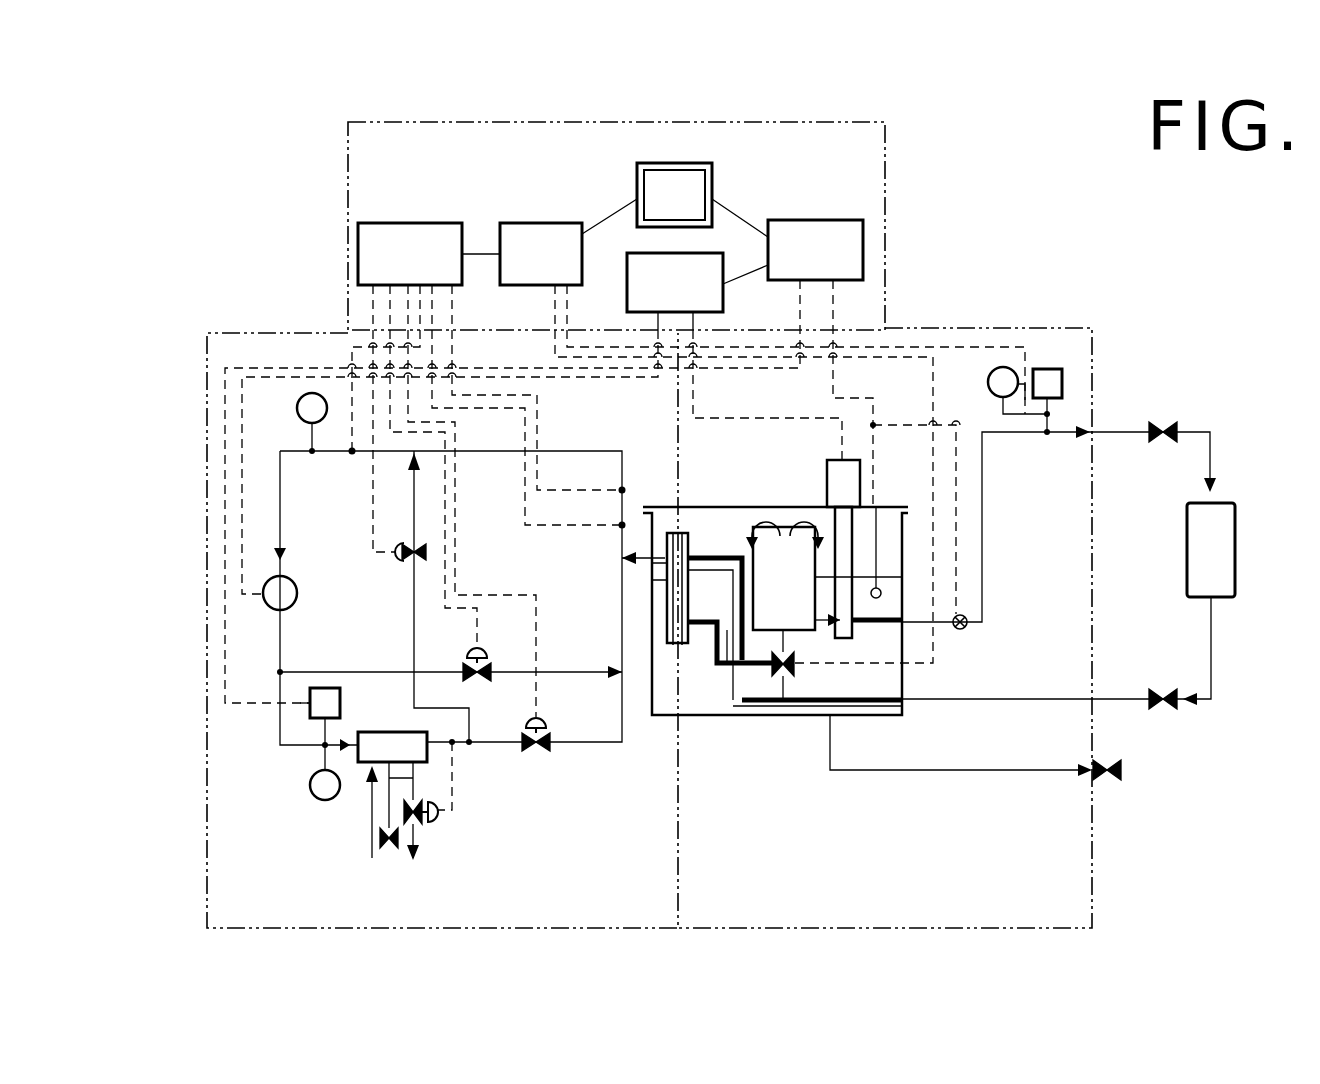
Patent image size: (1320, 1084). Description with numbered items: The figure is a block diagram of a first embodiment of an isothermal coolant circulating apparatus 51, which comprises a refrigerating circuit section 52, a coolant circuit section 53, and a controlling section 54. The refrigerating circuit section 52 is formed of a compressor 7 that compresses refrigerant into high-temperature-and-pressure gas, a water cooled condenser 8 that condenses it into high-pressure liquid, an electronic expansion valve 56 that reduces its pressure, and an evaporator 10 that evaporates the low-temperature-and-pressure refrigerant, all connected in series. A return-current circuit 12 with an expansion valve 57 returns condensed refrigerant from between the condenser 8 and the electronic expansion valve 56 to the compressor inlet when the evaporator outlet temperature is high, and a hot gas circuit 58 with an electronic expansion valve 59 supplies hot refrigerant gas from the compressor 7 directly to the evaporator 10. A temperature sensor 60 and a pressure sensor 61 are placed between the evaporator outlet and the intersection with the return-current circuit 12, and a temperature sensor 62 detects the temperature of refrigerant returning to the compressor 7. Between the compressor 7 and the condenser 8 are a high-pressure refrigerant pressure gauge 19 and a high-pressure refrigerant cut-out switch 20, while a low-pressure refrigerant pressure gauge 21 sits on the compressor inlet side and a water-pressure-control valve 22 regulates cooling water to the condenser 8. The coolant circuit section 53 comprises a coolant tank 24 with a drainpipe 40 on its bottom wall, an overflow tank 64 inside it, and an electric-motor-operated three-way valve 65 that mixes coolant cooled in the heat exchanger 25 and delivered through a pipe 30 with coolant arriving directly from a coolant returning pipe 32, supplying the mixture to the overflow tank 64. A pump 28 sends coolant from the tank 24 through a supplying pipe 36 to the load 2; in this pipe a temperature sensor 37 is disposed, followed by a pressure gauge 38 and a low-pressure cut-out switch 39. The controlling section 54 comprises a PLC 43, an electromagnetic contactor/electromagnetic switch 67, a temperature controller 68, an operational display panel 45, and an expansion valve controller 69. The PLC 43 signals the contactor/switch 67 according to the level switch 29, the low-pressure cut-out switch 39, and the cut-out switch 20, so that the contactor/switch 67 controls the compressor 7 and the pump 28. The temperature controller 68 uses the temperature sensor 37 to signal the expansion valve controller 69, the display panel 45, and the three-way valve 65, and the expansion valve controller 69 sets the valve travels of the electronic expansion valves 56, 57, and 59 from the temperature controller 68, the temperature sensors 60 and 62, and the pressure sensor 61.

The load 2 is at (1211, 550).
The compressor 7 is at (268, 608).
The condenser 8 is at (388, 732).
The evaporator 10 is at (652, 628).
The return-current circuit 12 is at (414, 606).
The high-pressure refrigerant pressure gauge 19 is at (328, 800).
The high-pressure refrigerant cut-out switch 20 is at (318, 712).
The low-pressure refrigerant pressure gauge 21 is at (312, 393).
The water-pressure-control valve 22 is at (440, 820).
The coolant tank 24 is at (786, 716).
The heat exchanger 25 is at (690, 645).
The pump 28 is at (830, 458).
The level switch 29 is at (878, 588).
The pipe 30 is at (725, 675).
The coolant returning pipe 32 is at (990, 701).
The supplying pipe 36 is at (982, 521).
The temperature sensor 37 is at (966, 628).
The pressure gauge 38 is at (1003, 366).
The low-pressure cut-out switch 39 is at (1049, 368).
The drainpipe 40 is at (988, 773).
The PLC 43 is at (815, 250).
The operational display panel 45 is at (674, 195).
The isothermal coolant circulating apparatus 51 is at (1064, 238).
The refrigerating circuit section 52 is at (215, 314).
The coolant circuit section 53 is at (1102, 357).
The controlling section 54 is at (893, 239).
The electronic expansion valve 56 is at (540, 752).
The expansion valve 57 is at (390, 556).
The hot gas circuit 58 is at (322, 685).
The electronic expansion valve 59 is at (480, 683).
The temperature sensor 60 is at (618, 530).
The pressure sensor 61 is at (622, 488).
The temperature sensor 62 is at (352, 456).
The overflow tank 64 is at (775, 560).
The electric-motor-operated three-way valve 65 is at (795, 667).
The electromagnetic contactor/electromagnetic switch 67 is at (675, 282).
The temperature controller 68 is at (541, 254).
The expansion valve controller 69 is at (410, 254).